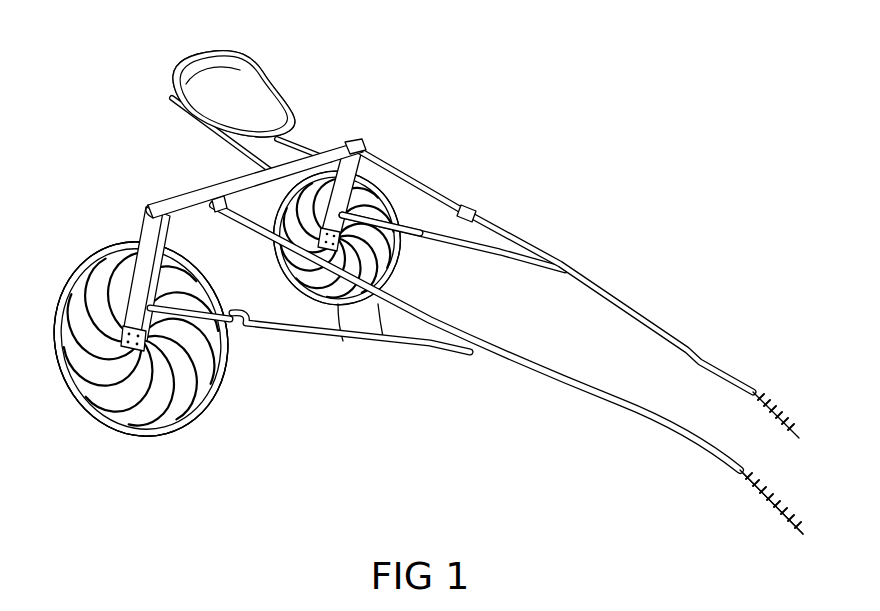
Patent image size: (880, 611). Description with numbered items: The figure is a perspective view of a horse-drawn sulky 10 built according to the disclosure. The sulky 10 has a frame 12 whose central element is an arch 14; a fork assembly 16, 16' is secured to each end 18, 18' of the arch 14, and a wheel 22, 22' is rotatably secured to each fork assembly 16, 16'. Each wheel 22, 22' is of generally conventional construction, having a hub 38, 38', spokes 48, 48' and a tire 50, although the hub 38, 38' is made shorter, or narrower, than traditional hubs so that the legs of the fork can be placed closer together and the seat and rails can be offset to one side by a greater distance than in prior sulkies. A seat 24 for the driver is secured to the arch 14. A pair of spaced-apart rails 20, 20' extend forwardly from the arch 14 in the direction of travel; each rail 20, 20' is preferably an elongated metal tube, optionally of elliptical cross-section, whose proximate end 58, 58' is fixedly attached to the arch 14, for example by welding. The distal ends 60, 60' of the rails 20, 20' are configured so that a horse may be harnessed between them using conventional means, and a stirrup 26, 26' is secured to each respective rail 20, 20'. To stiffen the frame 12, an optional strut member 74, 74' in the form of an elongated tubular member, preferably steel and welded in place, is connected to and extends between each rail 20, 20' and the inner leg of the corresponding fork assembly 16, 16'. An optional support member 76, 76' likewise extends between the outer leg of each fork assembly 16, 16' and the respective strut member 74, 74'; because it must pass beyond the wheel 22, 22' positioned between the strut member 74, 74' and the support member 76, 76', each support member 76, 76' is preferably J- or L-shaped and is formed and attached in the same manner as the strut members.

The sulky 10 is at (476, 118).
The frame 12 is at (130, 152).
The arch 14 is at (338, 150).
The fork assembly 16 is at (348, 176).
The fork assembly 16' is at (132, 321).
The end of the arch 18 is at (353, 149).
The end of the arch 18' is at (119, 254).
The rail 20 is at (555, 271).
The rail 20' is at (371, 352).
The wheel 22 is at (342, 220).
The wheel 22' is at (141, 339).
The seat 24 is at (205, 58).
The stirrup 26 is at (495, 201).
The stirrup 26' is at (410, 342).
The hub 38 is at (399, 252).
The hub 38' is at (103, 387).
The spokes 48 is at (387, 238).
The spokes 48' is at (152, 339).
The tire 50 is at (140, 437).
The proximate end of the rail 58 is at (327, 107).
The proximate end of the rail 58' is at (193, 178).
The distal end of the rail 60 is at (783, 394).
The distal end of the rail 60' is at (744, 502).
The strut member 74 is at (455, 234).
The strut member 74' is at (351, 347).
The support member 76 is at (393, 191).
The support member 76' is at (223, 353).